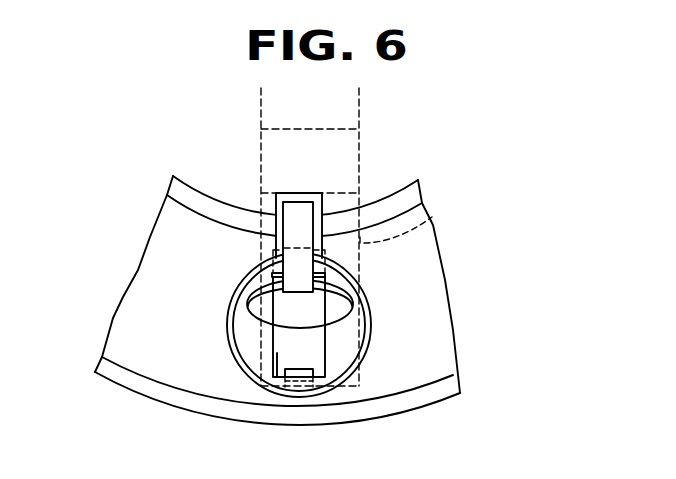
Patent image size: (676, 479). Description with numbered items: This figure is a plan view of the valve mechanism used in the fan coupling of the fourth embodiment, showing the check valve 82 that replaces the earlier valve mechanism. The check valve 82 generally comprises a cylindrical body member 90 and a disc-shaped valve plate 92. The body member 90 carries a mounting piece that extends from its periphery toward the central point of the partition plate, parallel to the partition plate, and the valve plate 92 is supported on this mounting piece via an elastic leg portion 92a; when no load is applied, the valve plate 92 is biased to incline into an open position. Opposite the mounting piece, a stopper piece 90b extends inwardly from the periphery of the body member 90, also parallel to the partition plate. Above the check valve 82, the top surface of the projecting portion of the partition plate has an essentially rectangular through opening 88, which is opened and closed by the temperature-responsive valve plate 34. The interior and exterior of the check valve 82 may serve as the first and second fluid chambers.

The valve plate 34 is at (432, 217).
The check valve 82 is at (385, 290).
The through opening 88 is at (277, 353).
The body member 90 is at (227, 335).
The stopper piece 90b is at (322, 385).
The valve plate 92 is at (246, 302).
The elastic leg portion 92a is at (292, 225).